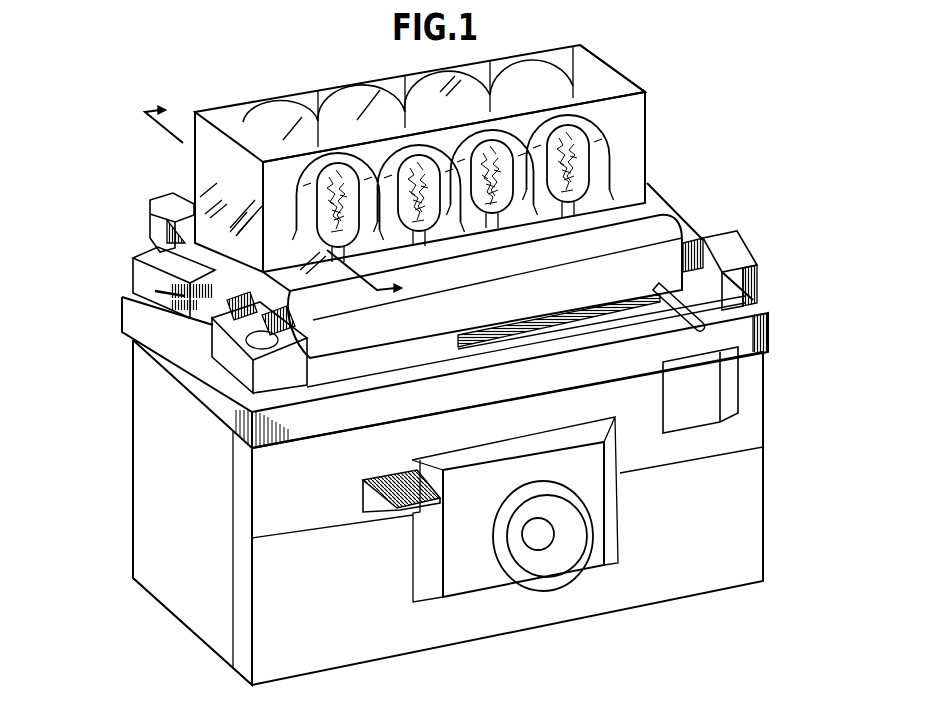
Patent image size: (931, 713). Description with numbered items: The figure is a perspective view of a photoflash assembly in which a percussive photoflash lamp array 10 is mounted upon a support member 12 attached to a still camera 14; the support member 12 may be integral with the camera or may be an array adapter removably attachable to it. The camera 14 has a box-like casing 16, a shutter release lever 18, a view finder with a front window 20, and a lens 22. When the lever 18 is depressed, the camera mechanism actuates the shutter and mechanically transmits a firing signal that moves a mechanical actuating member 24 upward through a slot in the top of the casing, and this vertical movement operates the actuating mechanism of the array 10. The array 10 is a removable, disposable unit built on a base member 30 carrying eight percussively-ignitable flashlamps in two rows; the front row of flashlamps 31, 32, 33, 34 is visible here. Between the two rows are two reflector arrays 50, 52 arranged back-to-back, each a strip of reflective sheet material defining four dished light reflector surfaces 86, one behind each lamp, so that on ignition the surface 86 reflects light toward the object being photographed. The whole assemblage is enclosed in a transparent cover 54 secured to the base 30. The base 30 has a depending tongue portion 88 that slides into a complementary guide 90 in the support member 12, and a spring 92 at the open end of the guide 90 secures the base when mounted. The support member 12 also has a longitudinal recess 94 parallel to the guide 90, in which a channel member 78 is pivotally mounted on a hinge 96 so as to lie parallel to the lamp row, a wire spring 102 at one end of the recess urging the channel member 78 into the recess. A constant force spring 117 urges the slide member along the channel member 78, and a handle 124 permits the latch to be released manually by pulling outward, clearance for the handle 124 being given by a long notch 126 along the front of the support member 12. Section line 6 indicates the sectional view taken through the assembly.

The percussive photoflash lamp array 10 is at (645, 135).
The support member 12 is at (693, 227).
The still camera 14 is at (134, 453).
The box-like casing 16 is at (150, 535).
The shutter release lever 18 is at (392, 476).
The front window 20 is at (713, 390).
The lens 22 is at (543, 538).
The mechanical actuating member 24 is at (597, 313).
The base member 30 is at (150, 205).
The percussively-ignitable flashlamp 31 is at (566, 127).
The percussively-ignitable flashlamp 32 is at (492, 143).
The percussively-ignitable flashlamp 33 is at (424, 158).
The percussively-ignitable flashlamp 34 is at (345, 165).
The reflector array 50 is at (640, 163).
The reflector array 52 is at (244, 114).
The transparent cover 54 is at (617, 78).
The channel member 78 is at (293, 353).
The light reflector surface 86 is at (280, 117).
The tongue portion 88 is at (212, 313).
The guide 90 is at (445, 372).
The spring 92 is at (196, 292).
The longitudinal recess 94 is at (710, 236).
The hinge 96 is at (270, 352).
The wire spring 102 is at (705, 255).
The constant force spring 117 is at (262, 345).
The handle 124 is at (692, 328).
The notch 126 is at (573, 323).
The section line 6 is at (282, 196).